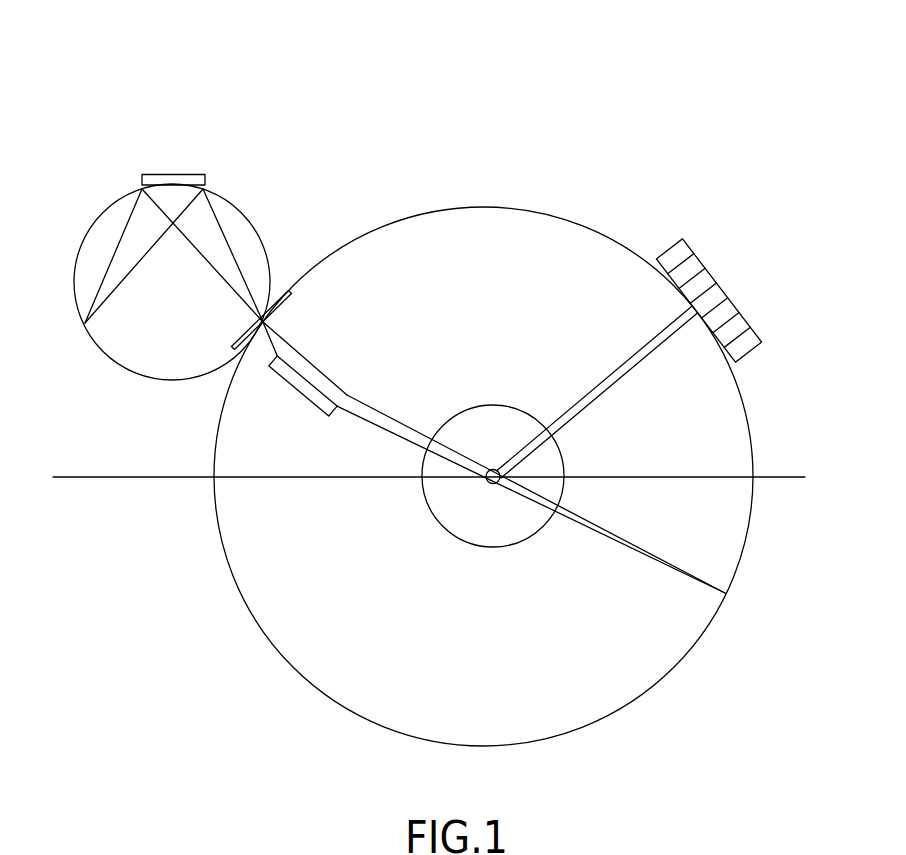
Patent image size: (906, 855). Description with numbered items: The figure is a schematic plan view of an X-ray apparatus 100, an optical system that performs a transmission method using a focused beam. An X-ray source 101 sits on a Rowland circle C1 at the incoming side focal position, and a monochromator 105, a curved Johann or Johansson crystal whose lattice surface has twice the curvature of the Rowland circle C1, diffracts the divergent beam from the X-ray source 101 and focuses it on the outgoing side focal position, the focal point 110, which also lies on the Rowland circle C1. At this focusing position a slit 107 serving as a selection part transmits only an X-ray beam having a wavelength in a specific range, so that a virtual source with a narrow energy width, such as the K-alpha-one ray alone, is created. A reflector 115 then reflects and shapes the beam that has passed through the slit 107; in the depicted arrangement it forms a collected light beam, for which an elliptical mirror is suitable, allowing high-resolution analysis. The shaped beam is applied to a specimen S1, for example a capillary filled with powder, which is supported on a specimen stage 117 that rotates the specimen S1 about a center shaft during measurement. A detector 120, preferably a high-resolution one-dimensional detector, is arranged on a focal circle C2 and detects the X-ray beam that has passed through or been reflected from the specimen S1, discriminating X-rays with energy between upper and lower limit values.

The X-ray apparatus 100 is at (365, 70).
The X-ray source 101 is at (85, 323).
The monochromator 105 is at (178, 174).
The slit 107 is at (290, 296).
The focal point 110 is at (268, 324).
The reflector 115 is at (288, 386).
The specimen stage 117 is at (501, 405).
The detector 120 is at (726, 294).
The Rowland circle C1 is at (89, 233).
The focal circle C2 is at (496, 207).
The specimen S1 is at (492, 484).